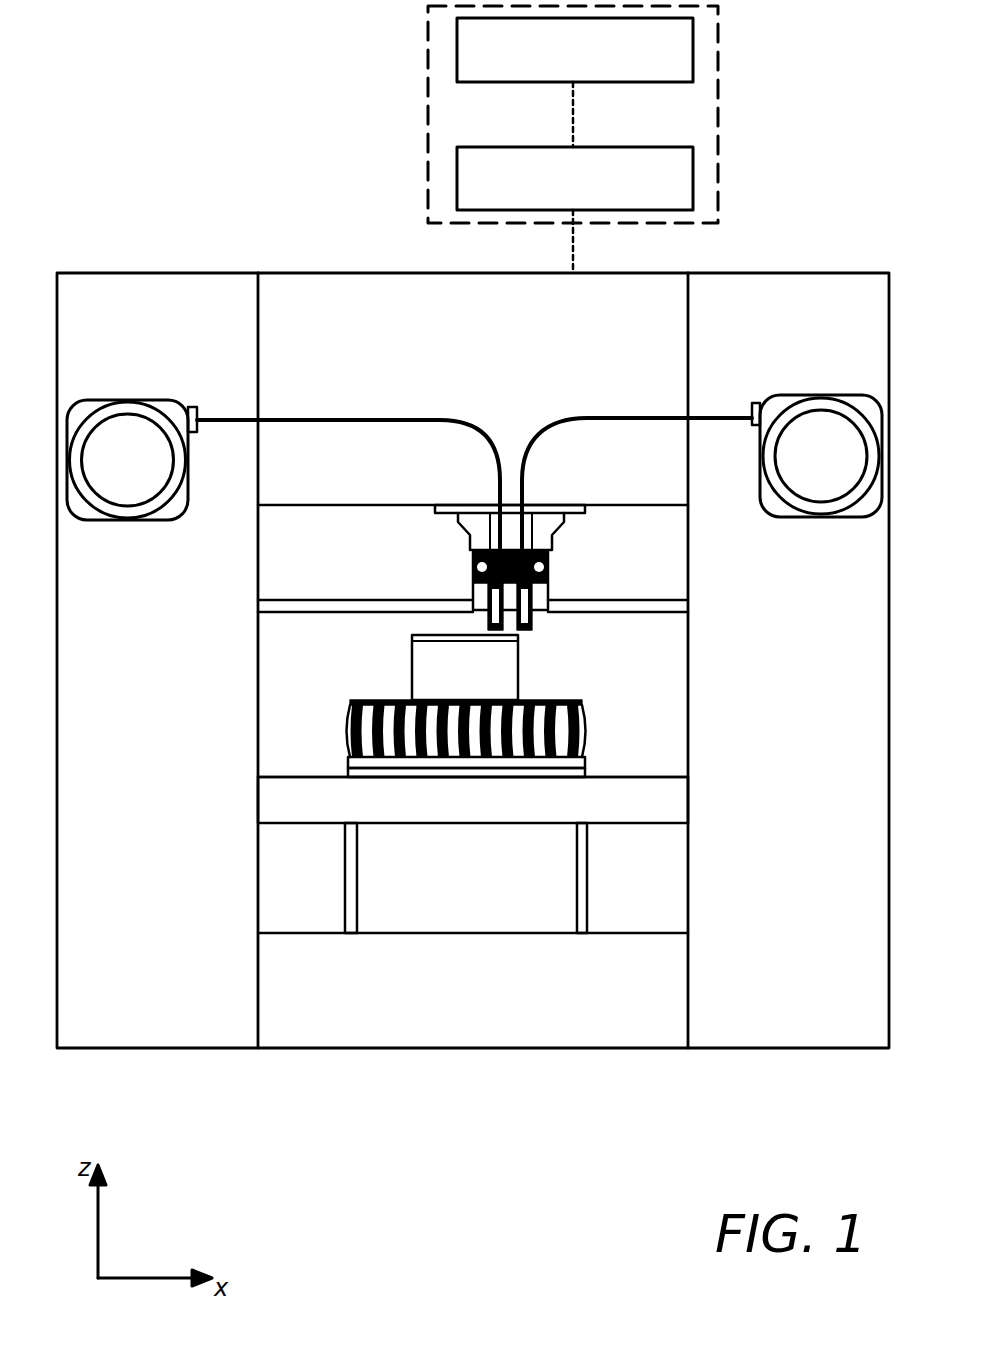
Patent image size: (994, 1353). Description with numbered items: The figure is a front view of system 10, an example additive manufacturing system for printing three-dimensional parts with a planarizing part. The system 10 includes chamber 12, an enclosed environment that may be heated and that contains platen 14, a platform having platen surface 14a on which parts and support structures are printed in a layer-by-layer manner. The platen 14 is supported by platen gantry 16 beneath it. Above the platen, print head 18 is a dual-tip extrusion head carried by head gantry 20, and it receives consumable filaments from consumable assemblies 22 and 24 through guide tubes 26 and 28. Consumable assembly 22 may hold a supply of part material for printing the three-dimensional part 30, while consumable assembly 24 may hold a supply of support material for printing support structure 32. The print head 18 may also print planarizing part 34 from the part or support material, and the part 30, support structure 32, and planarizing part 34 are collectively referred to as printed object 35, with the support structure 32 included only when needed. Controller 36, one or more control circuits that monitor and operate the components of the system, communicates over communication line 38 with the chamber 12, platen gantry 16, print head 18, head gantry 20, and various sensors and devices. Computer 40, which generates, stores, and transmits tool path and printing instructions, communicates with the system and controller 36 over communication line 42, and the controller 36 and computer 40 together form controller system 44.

The system 10 is at (285, 225).
The chamber 12 is at (258, 722).
The platen 14 is at (682, 813).
The platen surface 14a is at (650, 777).
The platen gantry 16 is at (605, 915).
The print head 18 is at (582, 563).
The head gantry 20 is at (327, 600).
The consumable assembly 22 is at (117, 400).
The consumable assembly 24 is at (785, 395).
The guide tube 26 is at (273, 420).
The guide tube 28 is at (697, 420).
The 3D part 30 is at (422, 682).
The support structure 32 is at (577, 765).
The planarizing part 34 is at (350, 776).
The printed object 35 is at (758, 632).
The controller 36 is at (693, 166).
The communication line 38 is at (573, 245).
The computer 40 is at (693, 30).
The communication line 42 is at (573, 108).
The controller system 44 is at (428, 110).